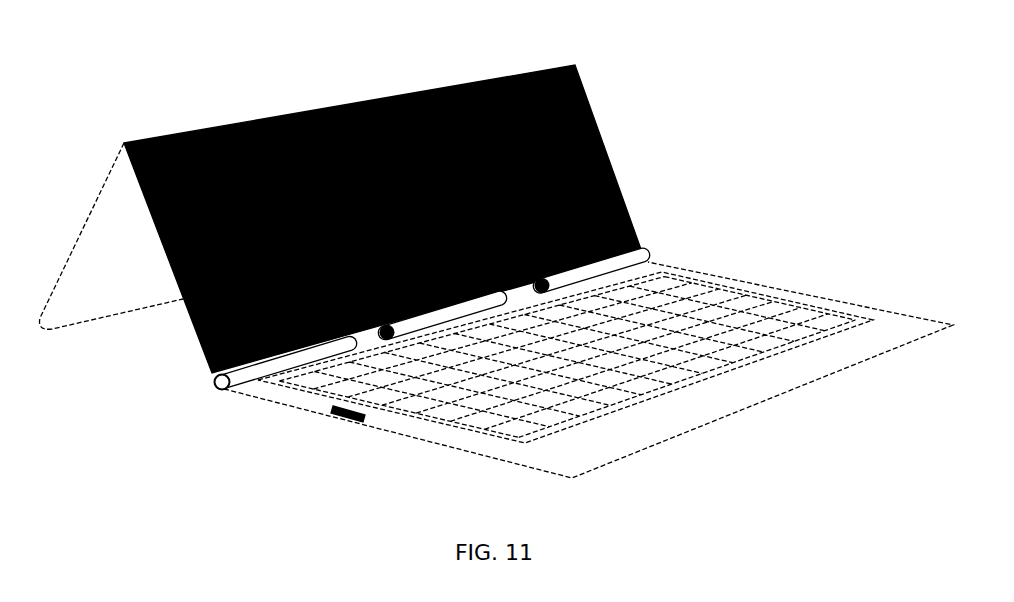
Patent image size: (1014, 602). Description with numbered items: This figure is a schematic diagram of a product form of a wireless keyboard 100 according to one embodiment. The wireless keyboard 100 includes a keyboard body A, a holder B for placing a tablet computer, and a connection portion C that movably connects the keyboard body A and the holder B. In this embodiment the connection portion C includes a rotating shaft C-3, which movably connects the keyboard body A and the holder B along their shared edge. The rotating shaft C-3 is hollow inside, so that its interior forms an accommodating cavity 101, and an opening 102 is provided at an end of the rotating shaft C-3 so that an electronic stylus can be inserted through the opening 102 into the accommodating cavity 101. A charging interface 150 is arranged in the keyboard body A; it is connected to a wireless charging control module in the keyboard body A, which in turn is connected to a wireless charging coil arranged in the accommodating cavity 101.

The holder B is at (379, 100).
The keyboard body A is at (700, 273).
The connection portion C is at (215, 379).
The rotating shaft C-3 is at (338, 408).
The wireless keyboard 100 is at (477, 455).
The accommodating cavity 101 is at (647, 258).
The opening 102 is at (219, 390).
The charging interface 150 is at (347, 421).